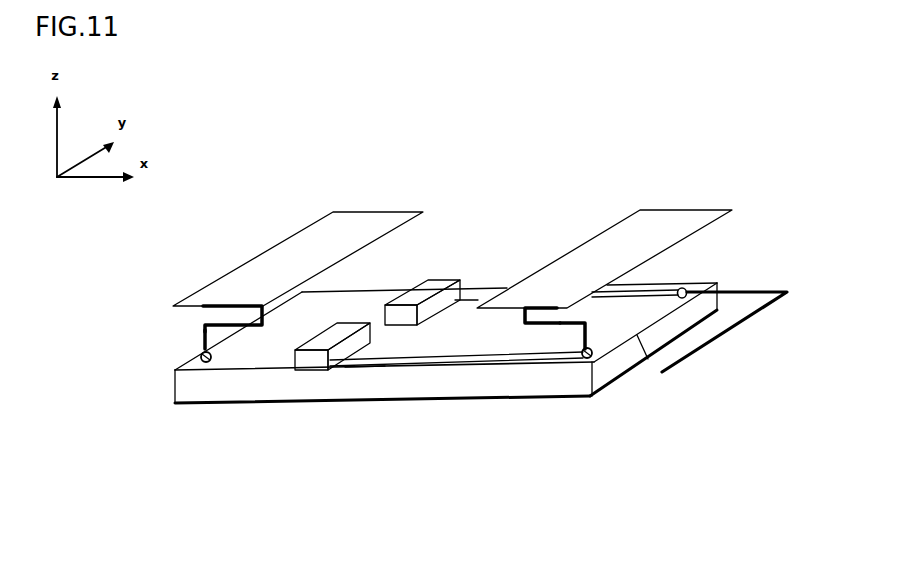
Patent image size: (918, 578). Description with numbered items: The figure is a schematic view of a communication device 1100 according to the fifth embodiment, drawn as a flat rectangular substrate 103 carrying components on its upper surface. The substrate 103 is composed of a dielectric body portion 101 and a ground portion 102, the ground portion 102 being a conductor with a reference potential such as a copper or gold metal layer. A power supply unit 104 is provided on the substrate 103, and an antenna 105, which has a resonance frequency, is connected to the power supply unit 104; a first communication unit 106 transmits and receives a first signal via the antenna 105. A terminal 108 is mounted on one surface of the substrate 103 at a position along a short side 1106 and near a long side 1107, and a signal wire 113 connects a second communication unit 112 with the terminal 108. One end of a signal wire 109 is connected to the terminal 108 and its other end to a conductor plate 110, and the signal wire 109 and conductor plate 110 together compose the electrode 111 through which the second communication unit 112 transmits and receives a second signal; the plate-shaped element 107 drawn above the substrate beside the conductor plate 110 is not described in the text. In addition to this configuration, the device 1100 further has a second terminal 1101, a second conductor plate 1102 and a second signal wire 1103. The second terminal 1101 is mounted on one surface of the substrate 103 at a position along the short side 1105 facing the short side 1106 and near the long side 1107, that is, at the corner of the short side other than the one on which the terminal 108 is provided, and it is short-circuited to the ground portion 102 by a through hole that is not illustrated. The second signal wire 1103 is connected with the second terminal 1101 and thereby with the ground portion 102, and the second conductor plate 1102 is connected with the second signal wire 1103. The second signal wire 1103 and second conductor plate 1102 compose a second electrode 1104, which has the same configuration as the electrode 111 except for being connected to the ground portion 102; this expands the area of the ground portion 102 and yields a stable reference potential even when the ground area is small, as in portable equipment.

The dielectric body portion 101 is at (190, 393).
The ground portion 102 is at (272, 406).
The substrate 103 is at (295, 460).
The power supply unit 104 is at (684, 285).
The antenna 105 is at (753, 289).
The first communication unit 106 is at (430, 281).
The electrode plate 107 is at (478, 302).
The terminal 108 is at (590, 360).
The signal wire 109 is at (522, 325).
The conductor plate 110 is at (572, 285).
The electrode 111 is at (603, 483).
The second communication unit 112 is at (370, 323).
The signal wire 113 is at (468, 366).
The communication device 1100 is at (664, 145).
The second terminal 1101 is at (200, 358).
The second conductor plate 1102 is at (265, 268).
The second signal wire 1103 is at (192, 298).
The second electrode 1104 is at (268, 197).
The short side 1105 is at (204, 353).
The short side 1106 is at (648, 361).
The long side 1107 is at (362, 370).